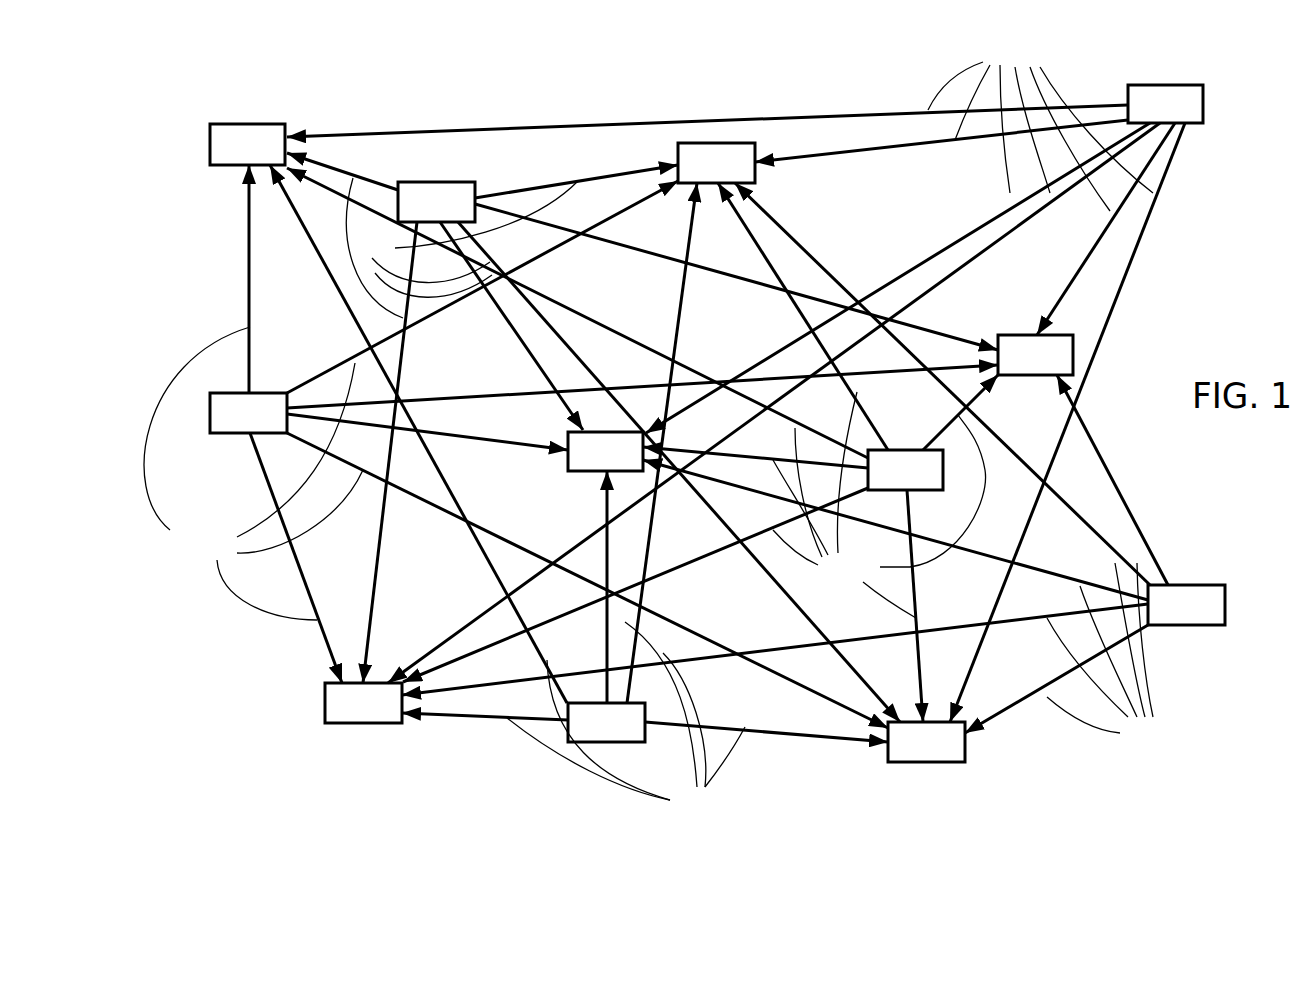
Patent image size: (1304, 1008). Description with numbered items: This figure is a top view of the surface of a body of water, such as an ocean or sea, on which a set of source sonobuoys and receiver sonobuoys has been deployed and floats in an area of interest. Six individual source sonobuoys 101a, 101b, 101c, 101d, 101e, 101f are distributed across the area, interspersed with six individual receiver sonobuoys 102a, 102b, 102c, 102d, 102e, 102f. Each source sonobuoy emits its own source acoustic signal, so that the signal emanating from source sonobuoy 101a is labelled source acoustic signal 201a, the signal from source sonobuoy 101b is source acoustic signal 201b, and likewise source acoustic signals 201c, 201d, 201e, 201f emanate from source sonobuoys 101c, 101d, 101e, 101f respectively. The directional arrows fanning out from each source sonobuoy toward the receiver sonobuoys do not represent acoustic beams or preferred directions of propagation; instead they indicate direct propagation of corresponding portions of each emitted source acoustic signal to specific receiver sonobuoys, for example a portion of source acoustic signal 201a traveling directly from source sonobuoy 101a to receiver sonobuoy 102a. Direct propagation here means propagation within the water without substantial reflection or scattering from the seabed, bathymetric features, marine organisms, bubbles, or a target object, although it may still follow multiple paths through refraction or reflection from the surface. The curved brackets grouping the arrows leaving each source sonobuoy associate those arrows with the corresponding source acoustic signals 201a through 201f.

The source sonobuoy 101a is at (467, 217).
The source sonobuoy 101b is at (1196, 119).
The source sonobuoy 101c is at (279, 428).
The source sonobuoy 101d is at (936, 485).
The source sonobuoy 101e is at (637, 737).
The source sonobuoy 101f is at (1215, 620).
The receiver sonobuoy 102a is at (278, 159).
The receiver sonobuoy 102b is at (747, 178).
The receiver sonobuoy 102c is at (636, 466).
The receiver sonobuoy 102d is at (1066, 370).
The receiver sonobuoy 102e is at (394, 718).
The receiver sonobuoy 102f is at (955, 757).
The source acoustic signal 201a is at (455, 248).
The source acoustic signal 201b is at (1040, 123).
The source acoustic signal 201c is at (253, 473).
The source acoustic signal 201d is at (879, 505).
The source acoustic signal 201e is at (626, 720).
The source acoustic signal 201f is at (1113, 655).